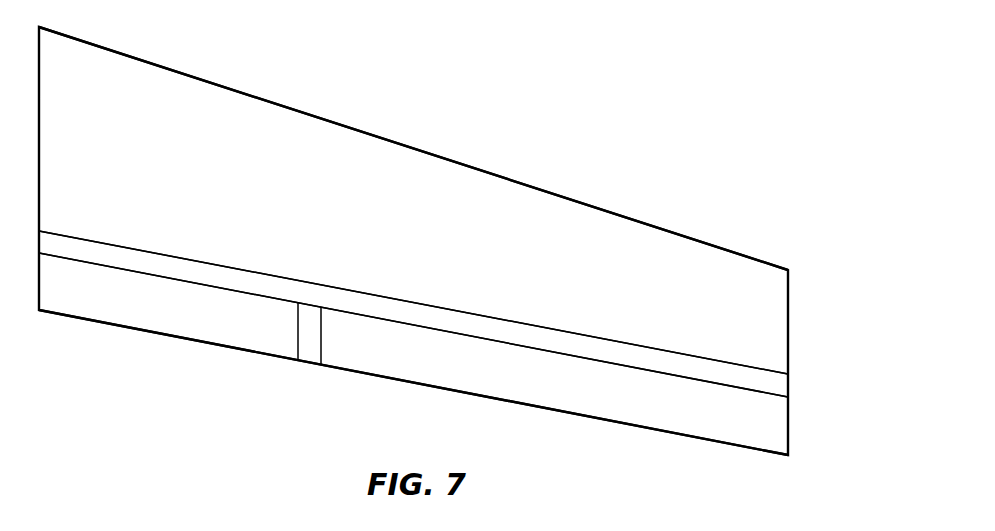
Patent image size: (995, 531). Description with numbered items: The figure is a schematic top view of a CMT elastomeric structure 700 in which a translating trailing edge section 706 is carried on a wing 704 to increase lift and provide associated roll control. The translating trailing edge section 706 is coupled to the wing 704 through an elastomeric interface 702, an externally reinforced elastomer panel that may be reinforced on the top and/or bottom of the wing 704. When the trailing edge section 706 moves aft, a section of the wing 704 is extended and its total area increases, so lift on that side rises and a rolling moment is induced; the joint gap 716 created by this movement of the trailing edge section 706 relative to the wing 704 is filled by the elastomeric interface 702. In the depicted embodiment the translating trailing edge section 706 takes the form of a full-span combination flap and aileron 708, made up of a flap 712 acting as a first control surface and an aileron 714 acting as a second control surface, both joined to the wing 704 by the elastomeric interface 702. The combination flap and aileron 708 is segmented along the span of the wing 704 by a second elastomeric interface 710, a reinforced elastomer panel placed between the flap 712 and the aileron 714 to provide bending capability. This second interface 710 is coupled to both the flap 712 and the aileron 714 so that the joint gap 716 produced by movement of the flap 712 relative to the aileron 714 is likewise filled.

The CMT elastomeric structure 700 is at (658, 45).
The elastomeric interface 702 is at (768, 381).
The wing 704 is at (245, 93).
The CMT translating trailing edge section 706 is at (335, 287).
The full-span combination flap and aileron 708 is at (160, 333).
The elastomeric interface 710 is at (310, 353).
The flap 712 is at (187, 316).
The aileron 714 is at (567, 390).
The joint gap 716 is at (268, 337).